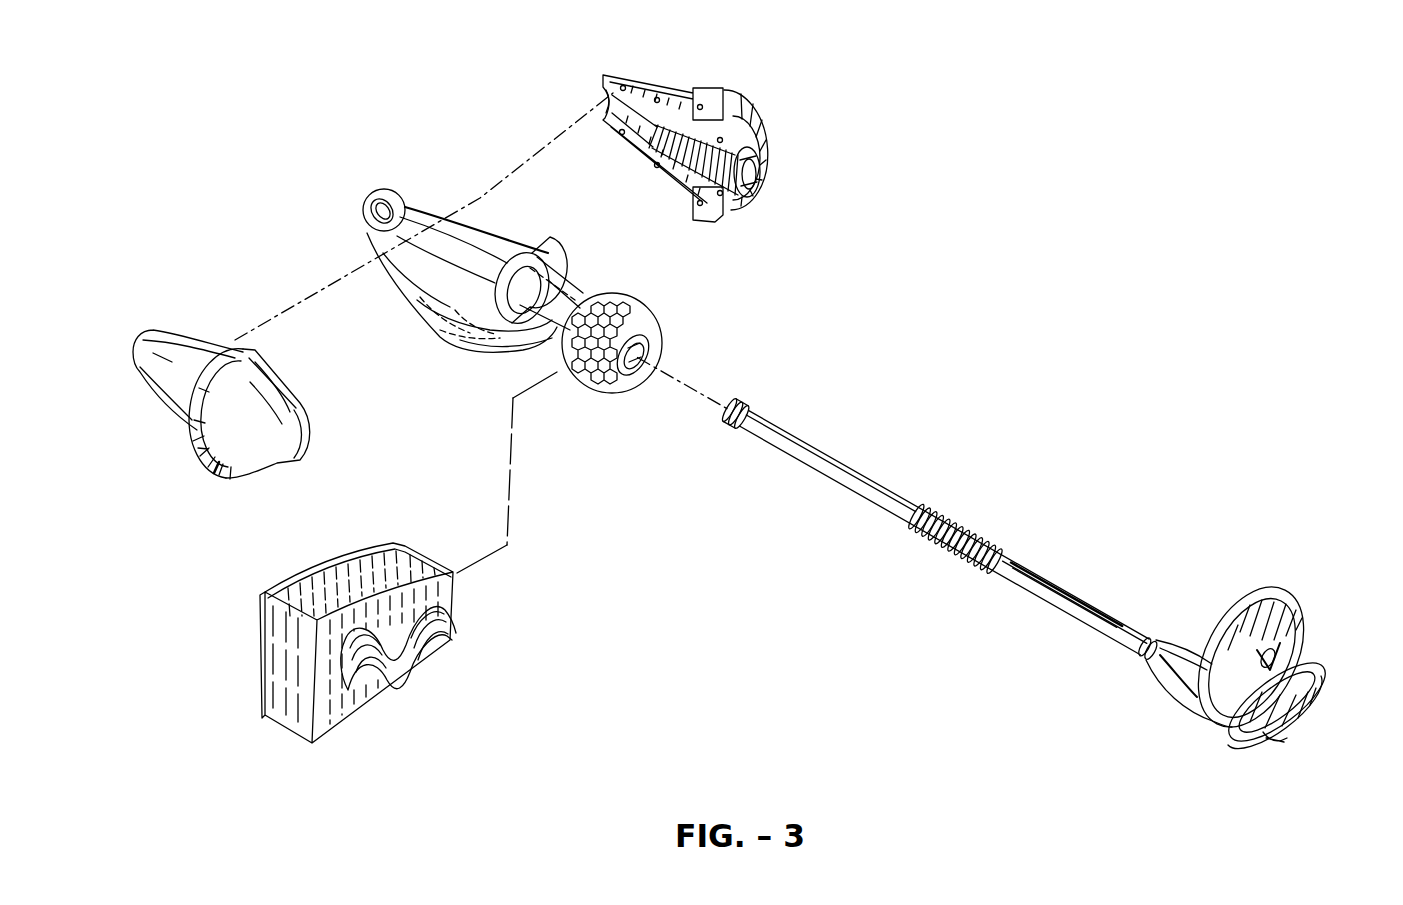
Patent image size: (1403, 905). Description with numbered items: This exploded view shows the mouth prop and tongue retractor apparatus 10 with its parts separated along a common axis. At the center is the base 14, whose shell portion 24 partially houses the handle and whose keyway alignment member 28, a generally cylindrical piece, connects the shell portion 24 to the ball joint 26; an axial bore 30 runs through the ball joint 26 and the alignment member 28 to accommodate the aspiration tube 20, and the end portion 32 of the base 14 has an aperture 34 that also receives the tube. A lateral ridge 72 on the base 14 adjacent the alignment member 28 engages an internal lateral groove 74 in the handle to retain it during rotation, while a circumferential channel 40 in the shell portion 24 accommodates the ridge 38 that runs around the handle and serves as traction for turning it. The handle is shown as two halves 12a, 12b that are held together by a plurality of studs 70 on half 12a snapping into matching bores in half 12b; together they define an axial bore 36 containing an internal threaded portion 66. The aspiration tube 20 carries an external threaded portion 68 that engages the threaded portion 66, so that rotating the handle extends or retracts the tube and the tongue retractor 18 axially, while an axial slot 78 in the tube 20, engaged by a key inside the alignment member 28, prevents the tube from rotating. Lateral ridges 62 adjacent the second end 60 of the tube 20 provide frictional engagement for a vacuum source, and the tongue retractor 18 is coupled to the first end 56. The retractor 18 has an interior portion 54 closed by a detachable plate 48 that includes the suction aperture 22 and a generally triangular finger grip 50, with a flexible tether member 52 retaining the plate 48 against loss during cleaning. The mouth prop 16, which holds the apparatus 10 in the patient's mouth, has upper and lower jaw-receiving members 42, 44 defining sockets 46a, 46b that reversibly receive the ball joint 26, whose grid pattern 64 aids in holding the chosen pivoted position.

The mouth prop and tongue retractor apparatus 10 is at (1143, 205).
The handle half 12a is at (657, 80).
The handle half 12b is at (167, 407).
The base 14 is at (438, 340).
The mouth prop 16 is at (258, 598).
The tongue retractor 18 is at (1298, 592).
The aspiration tube 20 is at (1132, 640).
The suction aperture 22 is at (1275, 734).
The shell portion 24 is at (470, 237).
The ball joint 26 is at (663, 310).
The keyway alignment member 28 is at (557, 293).
The axial bore 30 is at (643, 350).
The end portion 32 is at (375, 198).
The aperture 34 is at (377, 213).
The axial bore 36 is at (617, 94).
The ridge 38 is at (745, 100).
The circumferential channel 40 is at (543, 258).
The upper jaw-receiving member 42 is at (410, 553).
The lower jaw-receiving member 44 is at (450, 656).
The socket 46a is at (352, 685).
The socket 46b is at (404, 660).
The detachable plate 48 is at (1313, 690).
The finger grip 50 is at (1293, 710).
The tether member 52 is at (1292, 645).
The interior portion 54 is at (1243, 663).
The first end 56 is at (1162, 697).
The second end 60 is at (707, 422).
The lateral ridges 62 is at (740, 403).
The grid pattern 64 is at (597, 380).
The internal threaded portion 66 is at (713, 183).
The external threaded portion 68 is at (945, 550).
The studs 70 is at (657, 166).
The lateral ridge 72 is at (497, 264).
The internal lateral groove 74 is at (747, 183).
The axial slot 78 is at (1073, 592).